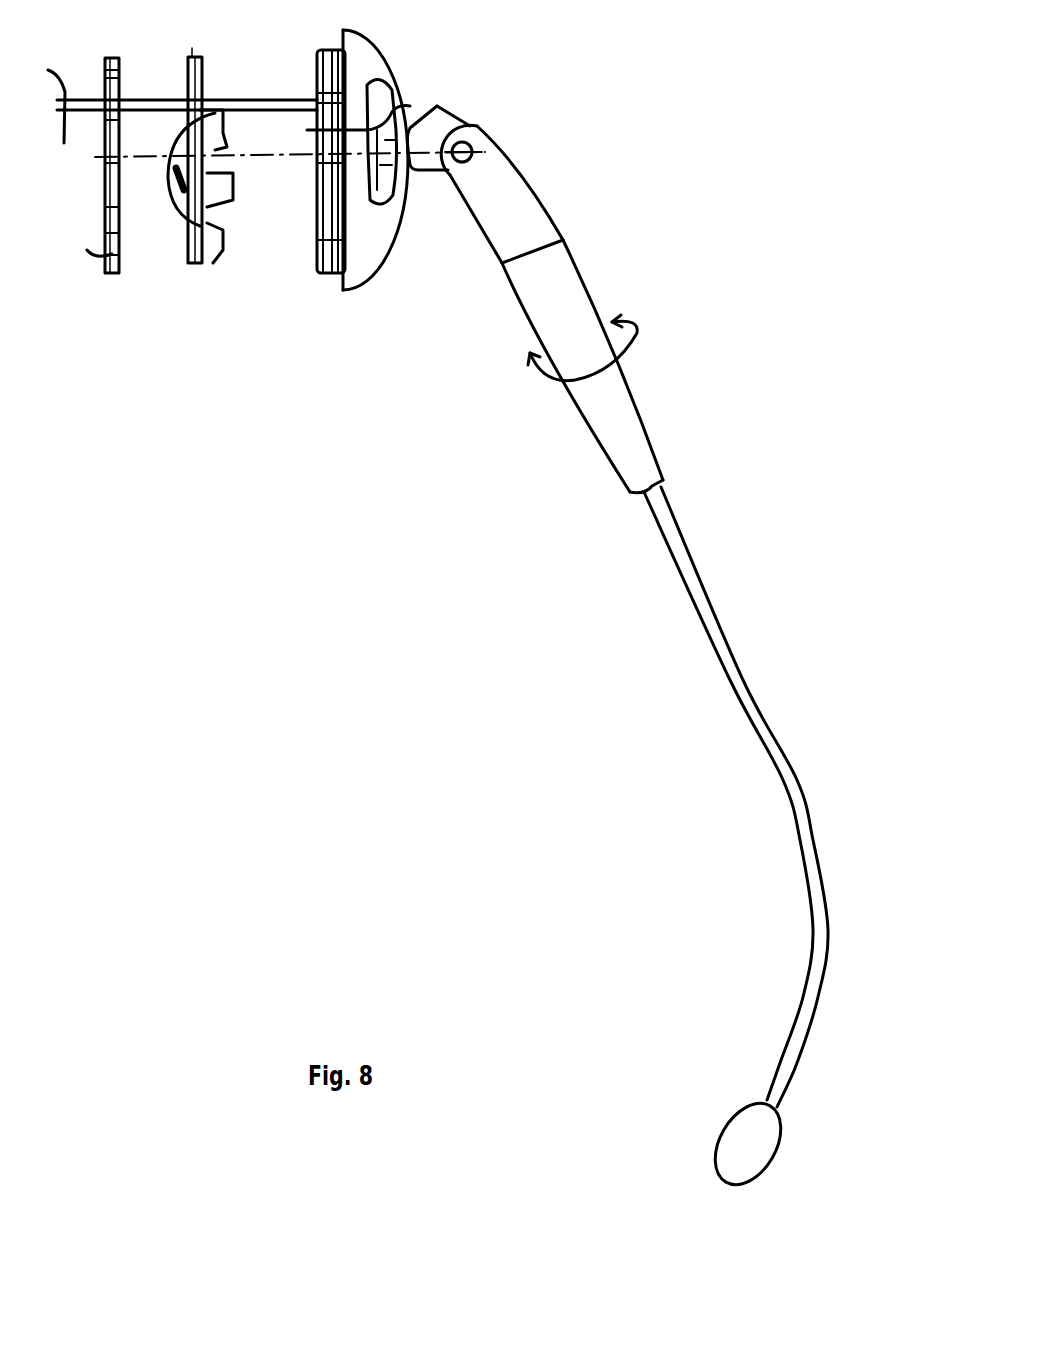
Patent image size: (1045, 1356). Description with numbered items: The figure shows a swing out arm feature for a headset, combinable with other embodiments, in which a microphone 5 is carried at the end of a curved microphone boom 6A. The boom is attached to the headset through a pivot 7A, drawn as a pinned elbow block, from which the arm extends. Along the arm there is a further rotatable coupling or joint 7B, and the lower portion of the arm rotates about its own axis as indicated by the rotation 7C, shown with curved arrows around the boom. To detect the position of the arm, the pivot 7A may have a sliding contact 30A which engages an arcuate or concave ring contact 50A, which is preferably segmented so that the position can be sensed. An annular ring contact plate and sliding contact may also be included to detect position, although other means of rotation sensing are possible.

The microphone 5 is at (740, 1125).
The microphone boom 6A is at (818, 842).
The pivot 7A is at (472, 134).
The rotatable coupling or joint 7B is at (571, 231).
The rotation 7C is at (640, 343).
The sliding contact 30A is at (408, 108).
The arcuate or concave ring contact 50A is at (180, 172).